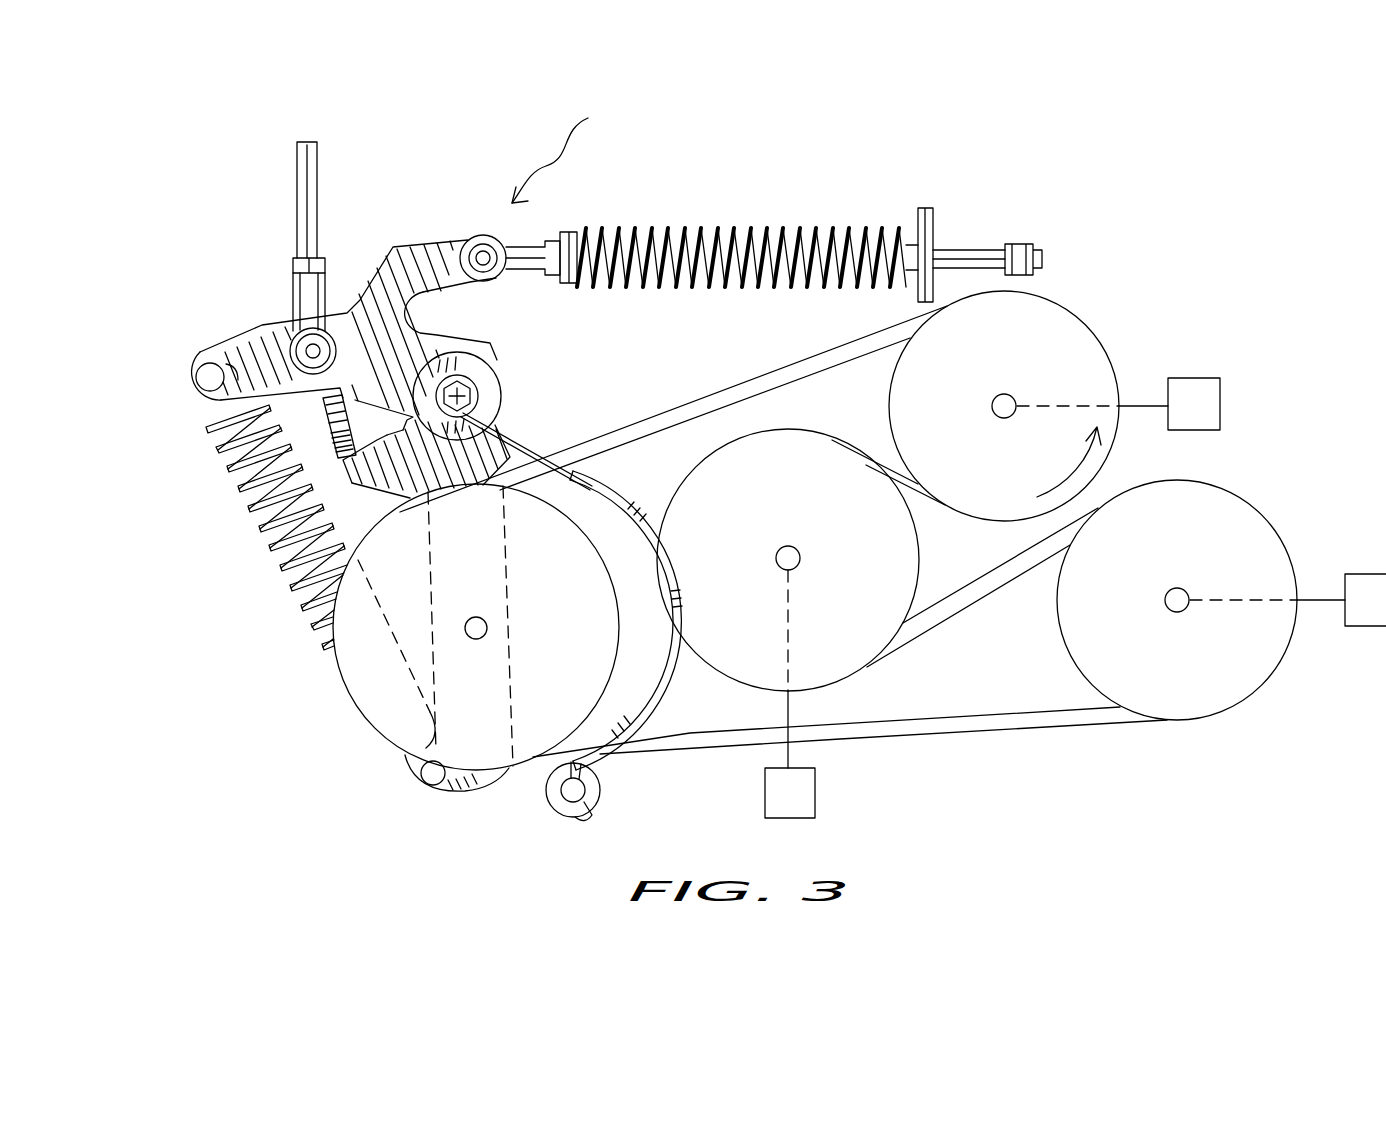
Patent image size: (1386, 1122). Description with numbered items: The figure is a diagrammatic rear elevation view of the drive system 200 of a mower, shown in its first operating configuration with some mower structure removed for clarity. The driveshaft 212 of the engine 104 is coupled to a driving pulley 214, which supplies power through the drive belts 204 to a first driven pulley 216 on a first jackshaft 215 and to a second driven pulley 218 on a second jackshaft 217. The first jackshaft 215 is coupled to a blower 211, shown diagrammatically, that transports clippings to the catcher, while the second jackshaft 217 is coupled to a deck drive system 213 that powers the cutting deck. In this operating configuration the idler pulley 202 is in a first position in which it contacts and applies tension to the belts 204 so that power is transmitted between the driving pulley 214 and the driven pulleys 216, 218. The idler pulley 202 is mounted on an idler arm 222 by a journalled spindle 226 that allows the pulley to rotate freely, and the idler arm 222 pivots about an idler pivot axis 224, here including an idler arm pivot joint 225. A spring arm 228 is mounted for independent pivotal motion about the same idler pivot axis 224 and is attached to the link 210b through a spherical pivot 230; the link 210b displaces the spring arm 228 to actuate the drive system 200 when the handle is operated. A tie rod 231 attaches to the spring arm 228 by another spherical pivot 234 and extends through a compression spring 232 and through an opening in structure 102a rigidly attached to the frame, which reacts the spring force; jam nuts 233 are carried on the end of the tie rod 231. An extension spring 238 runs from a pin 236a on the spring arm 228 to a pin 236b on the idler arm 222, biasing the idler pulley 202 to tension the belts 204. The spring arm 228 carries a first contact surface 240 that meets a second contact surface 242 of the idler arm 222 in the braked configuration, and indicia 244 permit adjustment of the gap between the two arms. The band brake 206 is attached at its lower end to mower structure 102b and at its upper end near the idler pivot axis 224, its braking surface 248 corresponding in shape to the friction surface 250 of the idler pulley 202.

The drive system 200 is at (579, 152).
The idler pulley 202 is at (370, 720).
The drive belt 204 is at (800, 362).
The band brake 206 is at (522, 456).
The link 210b is at (313, 142).
The driveshaft 212 is at (1004, 393).
The driving pulley 214 is at (1088, 333).
The engine 104 is at (1220, 395).
The first driven pulley 216 is at (1255, 508).
The first jackshaft 215 is at (1172, 613).
The blower 211 is at (1376, 628).
The second jackshaft 217 is at (798, 566).
The second driven pulley 218 is at (862, 672).
The deck drive system 213 is at (816, 802).
The idler arm 222 is at (512, 578).
The idler pivot axis 224 is at (470, 385).
The idler arm pivot joint 225 is at (426, 346).
The journalled spindle 226 is at (488, 633).
The spring arm 228 is at (372, 282).
The spherical pivot 230 is at (302, 336).
The tie rod 231 is at (985, 250).
The compression spring 232 is at (746, 228).
The jam nuts 233 is at (1042, 260).
The spherical pivot 234 is at (483, 235).
The pin 236a is at (197, 362).
The pin 236b is at (430, 786).
The extension spring 238 is at (284, 577).
The first contact surface 240 is at (335, 443).
The second contact surface 242 is at (362, 480).
The indicia 244 is at (356, 458).
The braking surface 248 is at (596, 482).
The friction surface 250 is at (598, 716).
The structure 102a is at (932, 212).
The mower structure 102b is at (566, 815).